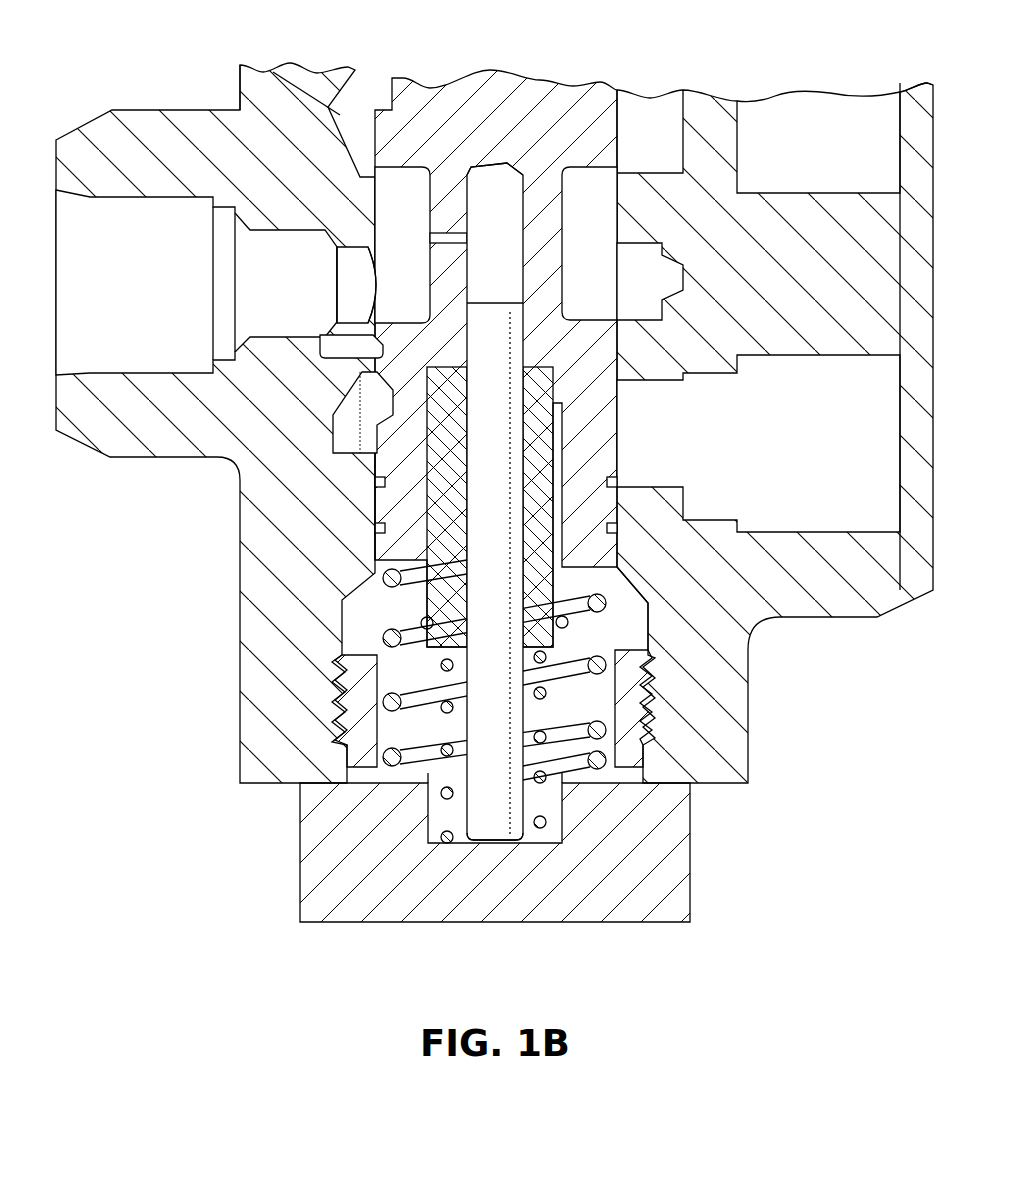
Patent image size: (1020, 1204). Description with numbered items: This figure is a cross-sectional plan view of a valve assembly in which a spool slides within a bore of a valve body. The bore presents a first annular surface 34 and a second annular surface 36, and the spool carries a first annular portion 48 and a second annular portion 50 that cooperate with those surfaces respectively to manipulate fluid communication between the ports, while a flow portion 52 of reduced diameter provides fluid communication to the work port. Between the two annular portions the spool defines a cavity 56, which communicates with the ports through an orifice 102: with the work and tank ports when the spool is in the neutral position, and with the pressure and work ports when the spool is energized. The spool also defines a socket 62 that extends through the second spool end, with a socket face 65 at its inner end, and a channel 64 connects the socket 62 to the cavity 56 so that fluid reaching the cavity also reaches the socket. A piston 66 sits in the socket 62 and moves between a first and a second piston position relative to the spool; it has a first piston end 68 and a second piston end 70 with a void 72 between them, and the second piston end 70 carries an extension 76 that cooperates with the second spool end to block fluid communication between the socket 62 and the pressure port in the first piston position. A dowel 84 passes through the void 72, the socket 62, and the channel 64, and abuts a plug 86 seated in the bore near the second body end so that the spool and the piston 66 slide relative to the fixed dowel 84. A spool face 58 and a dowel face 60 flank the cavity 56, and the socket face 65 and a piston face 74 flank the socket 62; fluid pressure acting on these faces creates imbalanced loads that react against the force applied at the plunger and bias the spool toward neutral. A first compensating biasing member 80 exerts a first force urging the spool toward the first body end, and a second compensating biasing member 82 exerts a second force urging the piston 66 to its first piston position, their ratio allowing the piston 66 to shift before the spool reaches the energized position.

The first annular surface 34 is at (345, 150).
The second annular surface 36 is at (390, 365).
The first annular portion 48 is at (393, 190).
The second annular portion 50 is at (430, 342).
The flow portion 52 is at (425, 268).
The cavity 56 is at (432, 186).
The spool face 58 is at (488, 200).
The dowel face 60 is at (478, 303).
The socket 62 is at (550, 388).
The channel 64 is at (378, 298).
The socket face 65 is at (395, 385).
The piston 66 is at (432, 503).
The first piston end 68 is at (423, 545).
The second piston end 70 is at (430, 655).
The void 72 is at (530, 525).
The piston face 74 is at (427, 408).
The extension 76 is at (556, 620).
The first compensating biasing member 80 is at (640, 747).
The second compensating biasing member 82 is at (384, 756).
The dowel 84 is at (480, 822).
The plug 86 is at (677, 867).
The orifice 102 is at (240, 108).